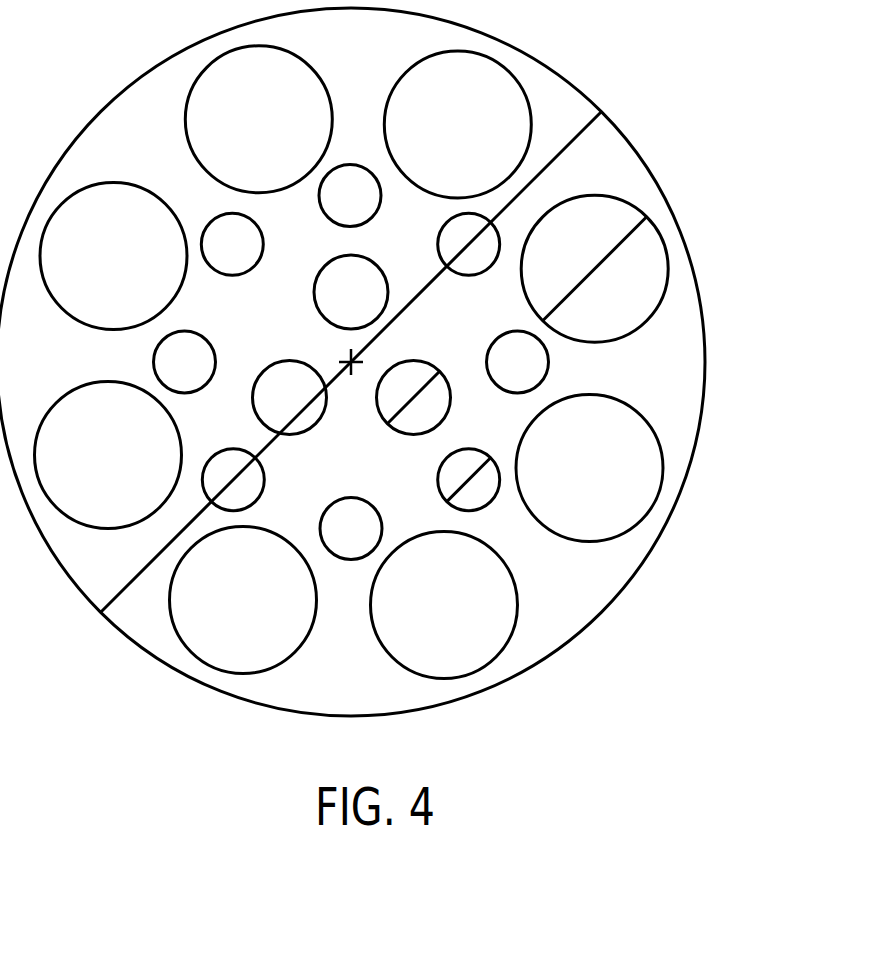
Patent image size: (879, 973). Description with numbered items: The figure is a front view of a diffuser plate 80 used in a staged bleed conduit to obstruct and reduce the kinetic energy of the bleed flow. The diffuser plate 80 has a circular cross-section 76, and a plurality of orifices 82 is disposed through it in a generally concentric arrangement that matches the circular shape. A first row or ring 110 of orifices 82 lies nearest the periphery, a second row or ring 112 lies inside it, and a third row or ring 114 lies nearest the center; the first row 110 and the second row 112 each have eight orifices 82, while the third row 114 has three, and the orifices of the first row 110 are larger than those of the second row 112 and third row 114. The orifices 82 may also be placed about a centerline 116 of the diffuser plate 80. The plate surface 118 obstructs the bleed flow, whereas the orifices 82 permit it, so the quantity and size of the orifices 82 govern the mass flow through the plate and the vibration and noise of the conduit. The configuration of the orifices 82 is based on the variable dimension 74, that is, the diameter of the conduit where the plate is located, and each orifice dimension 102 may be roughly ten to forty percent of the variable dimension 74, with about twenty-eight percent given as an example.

The diffuser plate 80 is at (700, 108).
The circular cross-section 76 is at (706, 362).
The variable dimension 74 is at (393, 323).
The centerline 116 is at (354, 375).
The first row or ring 110 is at (148, 192).
The second row or ring 112 is at (207, 268).
The third row or ring 114 is at (319, 310).
The orifice 82 is at (292, 435).
The orifice dimension 102 is at (597, 272).
The plate surface 118 is at (545, 607).